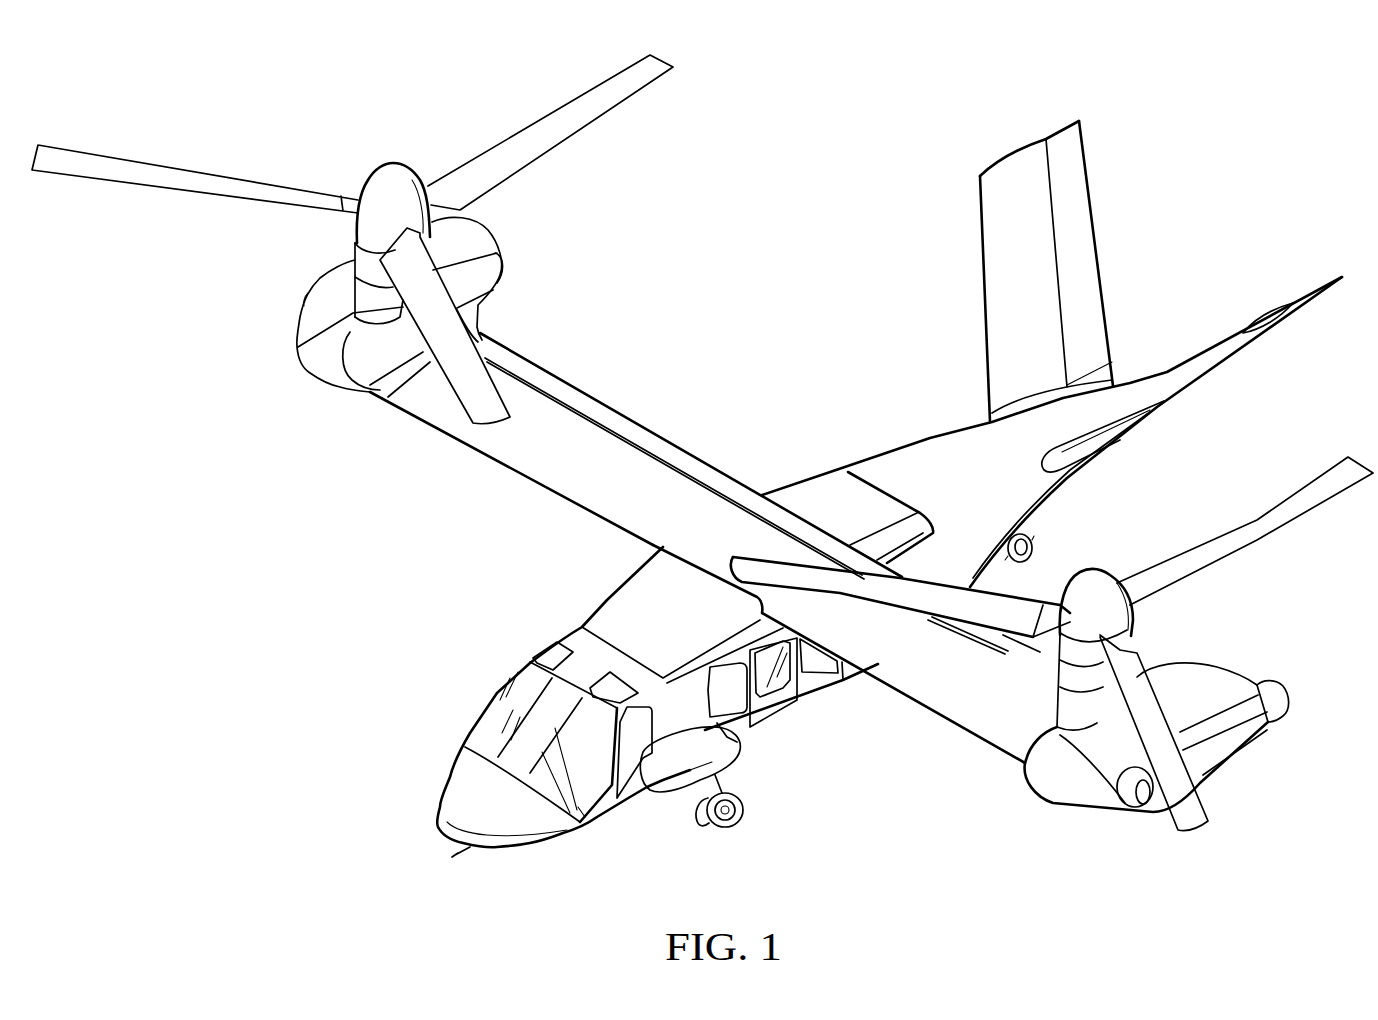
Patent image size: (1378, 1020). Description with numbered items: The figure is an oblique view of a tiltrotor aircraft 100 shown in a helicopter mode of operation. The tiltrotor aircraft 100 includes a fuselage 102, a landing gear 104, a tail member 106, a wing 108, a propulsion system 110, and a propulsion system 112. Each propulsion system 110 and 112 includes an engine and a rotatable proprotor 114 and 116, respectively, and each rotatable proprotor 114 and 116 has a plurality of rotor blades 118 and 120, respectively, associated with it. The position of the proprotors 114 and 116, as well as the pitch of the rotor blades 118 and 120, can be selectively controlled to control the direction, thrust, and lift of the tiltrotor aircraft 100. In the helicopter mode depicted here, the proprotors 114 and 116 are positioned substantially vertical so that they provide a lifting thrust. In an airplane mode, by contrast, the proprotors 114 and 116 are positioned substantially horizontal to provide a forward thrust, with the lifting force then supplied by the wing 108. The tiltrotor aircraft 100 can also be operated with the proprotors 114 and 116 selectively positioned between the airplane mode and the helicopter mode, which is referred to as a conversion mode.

The tiltrotor aircraft 100 is at (1186, 94).
The fuselage 102 is at (889, 447).
The landing gear 104 is at (742, 830).
The tail member 106 is at (1096, 226).
The wing 108 is at (927, 710).
The propulsion system 110 is at (1040, 855).
The propulsion system 112 is at (272, 242).
The rotatable proprotor 114 is at (1141, 622).
The rotatable proprotor 116 is at (395, 163).
The rotor blades 118 is at (1282, 526).
The rotor blades 120 is at (533, 118).